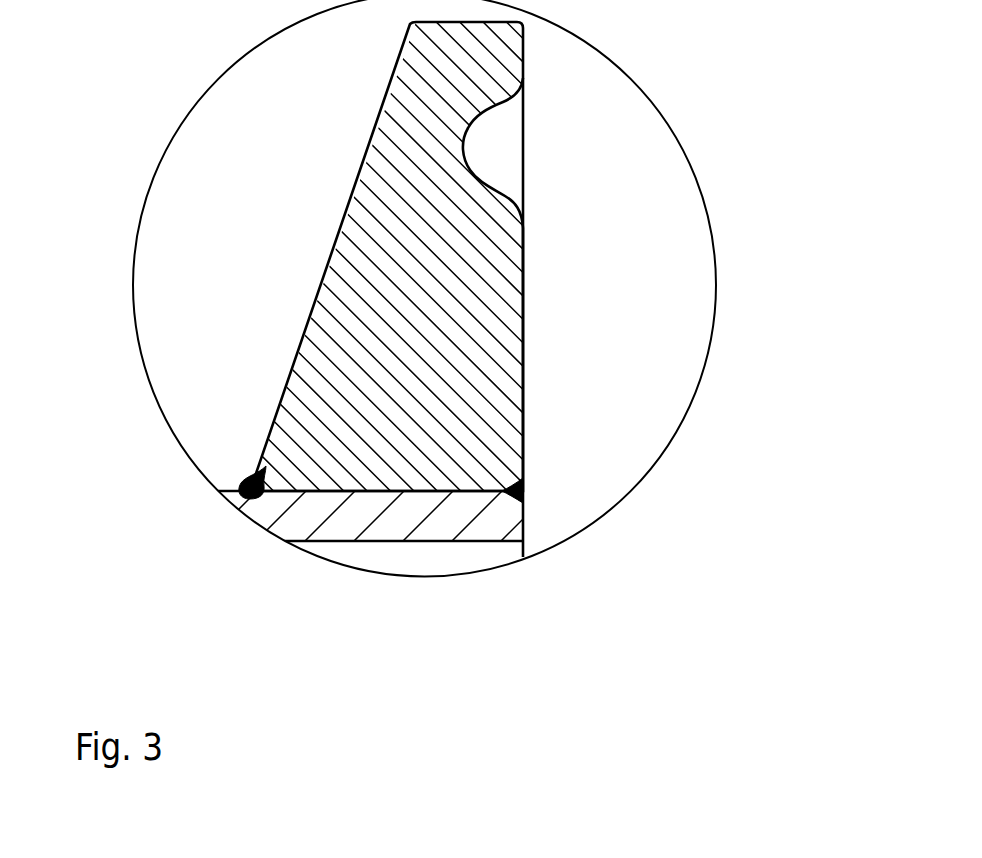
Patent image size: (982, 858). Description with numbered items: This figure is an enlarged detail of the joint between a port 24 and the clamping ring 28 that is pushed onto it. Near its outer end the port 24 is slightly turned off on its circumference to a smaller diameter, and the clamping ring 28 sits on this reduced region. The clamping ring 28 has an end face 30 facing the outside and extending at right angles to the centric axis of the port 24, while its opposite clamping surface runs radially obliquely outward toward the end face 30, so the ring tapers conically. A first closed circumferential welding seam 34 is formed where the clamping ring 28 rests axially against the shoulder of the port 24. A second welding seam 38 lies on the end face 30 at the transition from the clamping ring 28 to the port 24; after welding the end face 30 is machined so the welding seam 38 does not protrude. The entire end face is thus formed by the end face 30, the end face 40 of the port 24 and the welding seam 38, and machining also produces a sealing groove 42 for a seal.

The port 24 is at (387, 520).
The clamping ring 28 is at (368, 160).
The end face 30 is at (523, 240).
The first welding seam 34 is at (240, 481).
The second welding seam 38 is at (522, 490).
The end face of the port 40 is at (523, 515).
The sealing groove 42 is at (500, 132).